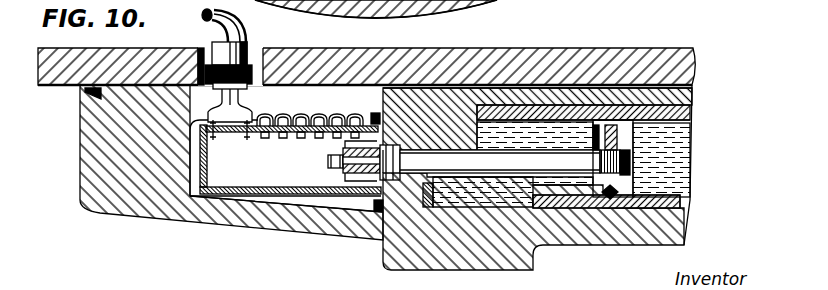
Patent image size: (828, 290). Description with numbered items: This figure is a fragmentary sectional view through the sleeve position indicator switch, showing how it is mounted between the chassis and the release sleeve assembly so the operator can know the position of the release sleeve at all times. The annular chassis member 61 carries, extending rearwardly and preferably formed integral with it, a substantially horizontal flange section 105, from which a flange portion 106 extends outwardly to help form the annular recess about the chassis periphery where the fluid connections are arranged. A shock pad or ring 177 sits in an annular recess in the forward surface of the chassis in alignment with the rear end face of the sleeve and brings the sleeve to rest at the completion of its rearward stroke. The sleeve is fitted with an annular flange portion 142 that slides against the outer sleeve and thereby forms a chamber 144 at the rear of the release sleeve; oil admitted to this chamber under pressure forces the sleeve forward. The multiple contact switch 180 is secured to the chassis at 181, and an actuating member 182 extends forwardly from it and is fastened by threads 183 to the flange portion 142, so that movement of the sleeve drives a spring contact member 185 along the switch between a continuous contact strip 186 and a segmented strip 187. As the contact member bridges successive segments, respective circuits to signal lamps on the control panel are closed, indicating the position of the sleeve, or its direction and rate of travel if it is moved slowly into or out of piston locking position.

The annular flange portion 142 is at (600, 120).
The switch securing point 181 is at (372, 116).
The actuating member 182 is at (510, 161).
The flange portion 106 is at (99, 144).
The continuous contact strip 186 is at (289, 186).
The segmented strip 187 is at (275, 138).
The horizontal flange section 105 is at (240, 212).
The multiple contact switch 180 is at (287, 199).
The spring contact member 185 is at (355, 184).
The shock pad or ring 177 is at (437, 200).
The annular chassis member 61 is at (472, 258).
The chamber 144 is at (513, 193).
The threads 183 is at (603, 187).